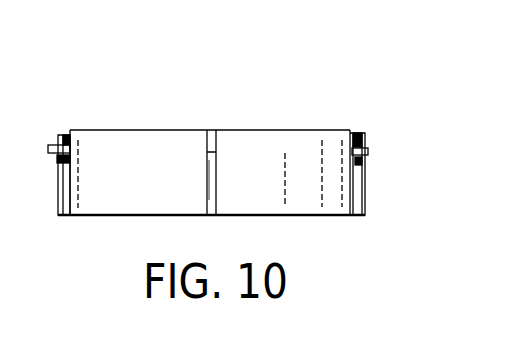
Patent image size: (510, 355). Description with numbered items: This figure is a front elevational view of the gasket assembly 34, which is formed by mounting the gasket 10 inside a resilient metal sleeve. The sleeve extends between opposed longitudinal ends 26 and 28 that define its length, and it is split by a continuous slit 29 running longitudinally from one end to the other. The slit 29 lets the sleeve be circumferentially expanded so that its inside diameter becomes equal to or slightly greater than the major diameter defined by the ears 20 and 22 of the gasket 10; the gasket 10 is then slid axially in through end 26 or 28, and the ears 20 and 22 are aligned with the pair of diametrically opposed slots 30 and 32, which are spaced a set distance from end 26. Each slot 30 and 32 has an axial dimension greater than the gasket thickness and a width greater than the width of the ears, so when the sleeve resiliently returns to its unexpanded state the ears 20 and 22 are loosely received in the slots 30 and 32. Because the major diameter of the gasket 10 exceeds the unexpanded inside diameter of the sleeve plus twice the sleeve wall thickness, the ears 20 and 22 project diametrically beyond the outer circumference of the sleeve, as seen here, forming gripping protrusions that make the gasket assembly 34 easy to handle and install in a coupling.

The gasket 10 is at (209, 150).
The ear 20 is at (55, 148).
The ear 22 is at (368, 150).
The longitudinal end 26 is at (100, 130).
The longitudinal end 28 is at (133, 217).
The slit 29 is at (213, 178).
The slot 30 is at (58, 158).
The slot 32 is at (366, 163).
The gasket assembly 34 is at (311, 97).